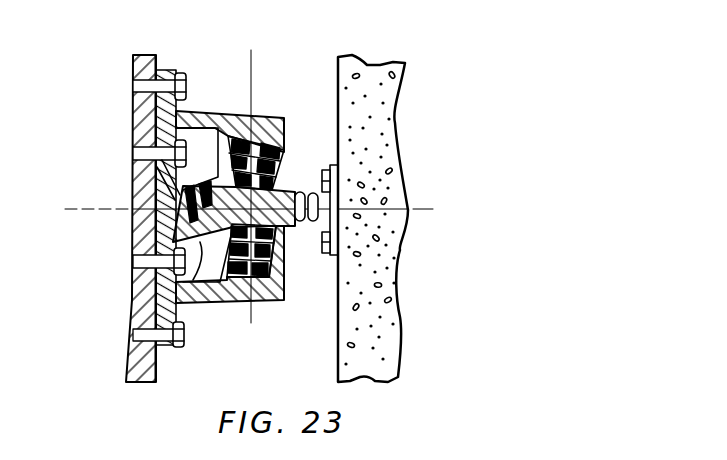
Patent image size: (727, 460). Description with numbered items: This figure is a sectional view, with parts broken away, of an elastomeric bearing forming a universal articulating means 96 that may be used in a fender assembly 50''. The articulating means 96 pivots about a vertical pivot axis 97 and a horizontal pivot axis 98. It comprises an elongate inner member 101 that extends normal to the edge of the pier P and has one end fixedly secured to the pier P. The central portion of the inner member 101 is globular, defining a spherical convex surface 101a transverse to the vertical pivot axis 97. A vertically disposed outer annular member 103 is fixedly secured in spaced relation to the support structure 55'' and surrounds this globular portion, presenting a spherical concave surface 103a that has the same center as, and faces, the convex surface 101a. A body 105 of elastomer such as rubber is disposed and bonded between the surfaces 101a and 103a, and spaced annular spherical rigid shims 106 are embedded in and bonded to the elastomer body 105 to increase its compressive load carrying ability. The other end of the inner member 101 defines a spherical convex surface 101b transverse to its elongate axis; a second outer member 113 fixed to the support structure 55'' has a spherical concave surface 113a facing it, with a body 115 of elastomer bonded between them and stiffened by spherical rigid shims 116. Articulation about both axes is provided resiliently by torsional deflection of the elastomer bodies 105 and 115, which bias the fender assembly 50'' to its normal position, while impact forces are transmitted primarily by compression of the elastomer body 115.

The fender assembly 50'' is at (125, 195).
The support structure 55'' is at (160, 176).
The vertical pivot axis 97 is at (250, 88).
The annular spherical rigid shims 106 is at (197, 113).
The universal articulating means 96 is at (278, 116).
The body of elastomer 105 is at (288, 158).
The spherical convex surface 101a is at (268, 186).
The inner member 101 is at (286, 222).
The spherical convex surface 101b is at (202, 310).
The horizontal pivot axis 98 is at (204, 191).
The second outer member 113 is at (165, 200).
The spherical concave surface 113a is at (173, 203).
The body of elastomer 115 is at (160, 124).
The spherical rigid shims 116 is at (157, 238).
The outer annular member 103 is at (248, 302).
The spherical concave surface 103a is at (277, 265).
The pier P is at (378, 254).